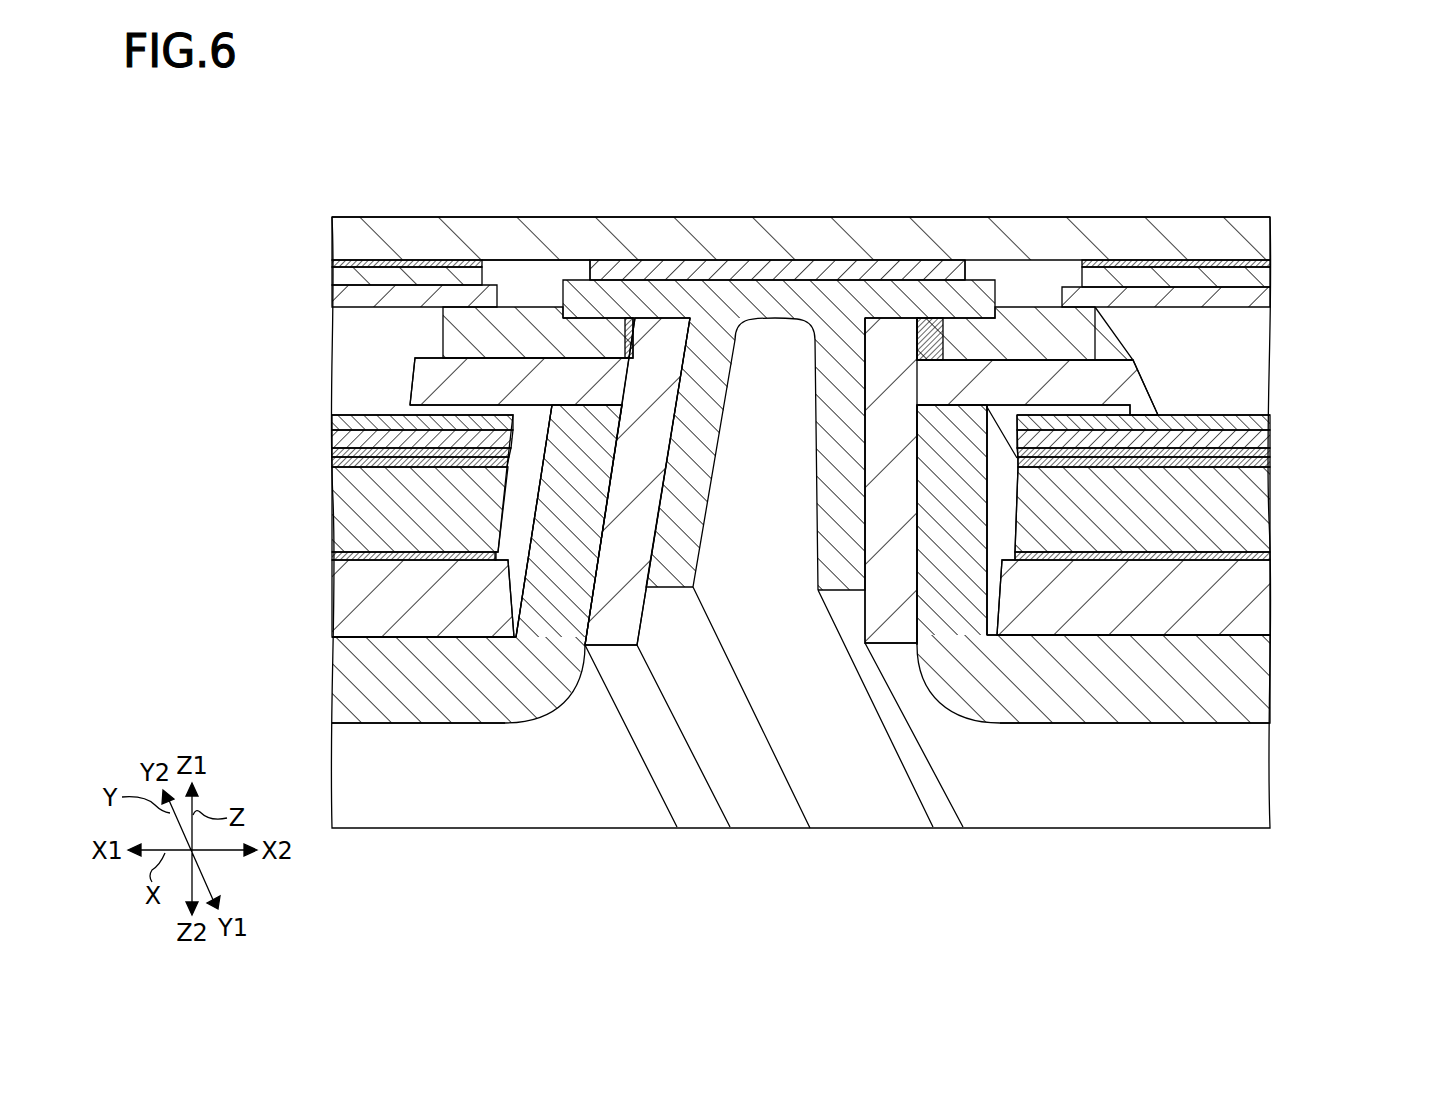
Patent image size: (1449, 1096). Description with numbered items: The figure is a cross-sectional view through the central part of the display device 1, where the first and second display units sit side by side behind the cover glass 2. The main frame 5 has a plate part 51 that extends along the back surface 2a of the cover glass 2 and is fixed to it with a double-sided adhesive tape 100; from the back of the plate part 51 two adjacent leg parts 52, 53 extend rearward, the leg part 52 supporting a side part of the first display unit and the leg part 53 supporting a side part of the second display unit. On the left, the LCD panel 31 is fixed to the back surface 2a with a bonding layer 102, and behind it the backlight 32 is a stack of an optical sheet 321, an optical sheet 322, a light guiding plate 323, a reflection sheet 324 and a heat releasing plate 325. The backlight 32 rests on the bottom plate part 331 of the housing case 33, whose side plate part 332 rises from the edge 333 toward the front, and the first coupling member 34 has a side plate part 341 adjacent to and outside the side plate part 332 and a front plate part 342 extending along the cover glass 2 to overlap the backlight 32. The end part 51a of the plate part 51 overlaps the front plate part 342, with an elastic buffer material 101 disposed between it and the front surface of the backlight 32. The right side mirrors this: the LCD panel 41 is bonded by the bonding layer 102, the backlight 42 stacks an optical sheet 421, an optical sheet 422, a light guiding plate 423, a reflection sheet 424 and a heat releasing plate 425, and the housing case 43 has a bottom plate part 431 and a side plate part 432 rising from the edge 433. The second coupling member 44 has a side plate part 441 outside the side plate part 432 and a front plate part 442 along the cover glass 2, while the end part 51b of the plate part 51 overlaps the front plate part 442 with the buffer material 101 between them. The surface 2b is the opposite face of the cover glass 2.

The display device 1 is at (828, 94).
The cover glass 2 is at (1195, 228).
The back surface of cover glass 2a is at (507, 278).
The second surface of nozzle plate 2b is at (343, 216).
The main frame 5 is at (762, 610).
The liquid crystal display panel 31 is at (326, 265).
The backlight 32 is at (221, 395).
The housing case 33 is at (366, 672).
The first coupling member 34 is at (550, 481).
The LCD panel 41 is at (1275, 265).
The backlight 42 is at (1388, 395).
The housing case 43 is at (1231, 670).
The second coupling member 44 is at (1011, 480).
The plate part 51 is at (780, 297).
The end part of plate part 51a is at (603, 287).
The end part of plate part 51b is at (978, 272).
The leg part 52 is at (668, 600).
The leg part 53 is at (840, 585).
The double-sided adhesive tape 100 is at (717, 277).
The elastic buffer material 101 is at (450, 332).
The bonding layer 102 is at (432, 262).
The optical sheet 321 is at (332, 419).
The optical sheet 322 is at (330, 432).
The light guiding plate 323 is at (332, 505).
The reflection sheet 324 is at (332, 553).
The heat releasing plate 325 is at (340, 592).
The bottom plate part 331 is at (355, 700).
The side plate part 332 is at (552, 525).
The edge 333 is at (533, 683).
The side plate part 341 is at (615, 623).
The front plate part 342 is at (427, 373).
The optical sheet 421 is at (1272, 416).
The optical sheet 422 is at (1272, 432).
The light guiding plate 423 is at (1272, 503).
The reflection sheet 424 is at (1272, 555).
The heat releasing plate 425 is at (1245, 590).
The bottom plate part 431 is at (1235, 700).
The side plate part 432 is at (940, 520).
The edge 433 is at (932, 683).
The side plate part 441 is at (910, 615).
The front plate part 442 is at (1113, 375).